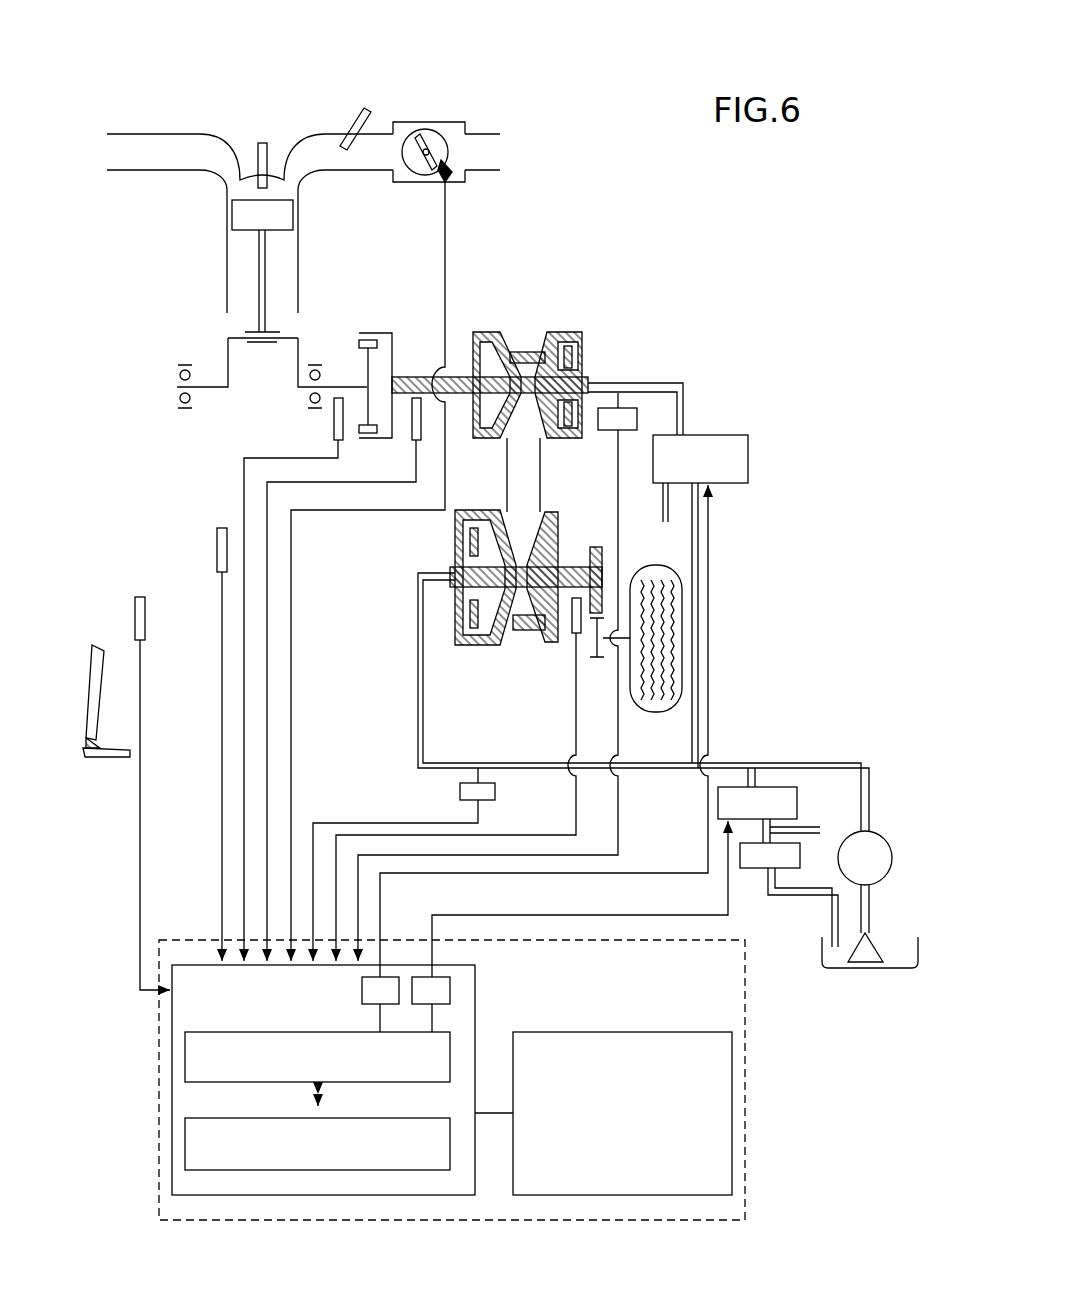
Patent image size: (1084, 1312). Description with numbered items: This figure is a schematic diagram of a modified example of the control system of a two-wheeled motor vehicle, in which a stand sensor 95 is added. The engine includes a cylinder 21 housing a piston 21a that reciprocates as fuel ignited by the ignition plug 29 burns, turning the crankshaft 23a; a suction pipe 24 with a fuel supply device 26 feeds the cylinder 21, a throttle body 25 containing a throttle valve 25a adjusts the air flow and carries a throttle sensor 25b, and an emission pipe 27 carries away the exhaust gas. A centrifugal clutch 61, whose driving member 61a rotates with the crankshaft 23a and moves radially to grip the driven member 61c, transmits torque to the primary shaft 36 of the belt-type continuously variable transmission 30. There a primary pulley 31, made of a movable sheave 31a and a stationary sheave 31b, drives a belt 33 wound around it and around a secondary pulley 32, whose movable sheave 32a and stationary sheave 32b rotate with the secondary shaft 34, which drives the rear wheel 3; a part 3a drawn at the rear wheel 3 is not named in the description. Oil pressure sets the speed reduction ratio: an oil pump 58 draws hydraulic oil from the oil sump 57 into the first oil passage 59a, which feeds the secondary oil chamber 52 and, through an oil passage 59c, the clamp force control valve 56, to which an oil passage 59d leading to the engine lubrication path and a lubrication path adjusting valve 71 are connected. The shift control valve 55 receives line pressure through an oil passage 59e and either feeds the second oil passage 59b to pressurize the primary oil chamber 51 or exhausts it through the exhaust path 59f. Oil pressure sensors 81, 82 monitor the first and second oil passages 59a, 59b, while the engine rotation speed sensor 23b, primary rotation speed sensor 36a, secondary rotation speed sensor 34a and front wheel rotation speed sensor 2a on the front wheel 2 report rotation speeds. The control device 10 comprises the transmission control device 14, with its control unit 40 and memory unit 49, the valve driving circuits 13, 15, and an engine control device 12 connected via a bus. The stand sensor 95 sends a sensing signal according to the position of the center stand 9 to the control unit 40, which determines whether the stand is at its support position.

The front wheel 2 is at (234, 70).
The emission pipe 27 is at (165, 133).
The ignition plug 29 is at (264, 141).
The fuel supply device 26 is at (346, 110).
The suction pipe 24 is at (381, 132).
The throttle body 25 is at (433, 121).
The throttle sensor 25b is at (454, 123).
The throttle valve 25a is at (454, 166).
The piston 21a is at (296, 216).
The cylinder 21 is at (300, 243).
The crankshaft 23a is at (210, 384).
The engine rotation speed sensor 23b is at (332, 420).
The clutch 61 is at (335, 267).
The driving member 61a is at (360, 338).
The driven member 61c is at (394, 346).
The primary shaft 36 is at (445, 366).
The primary rotation speed sensor 36a is at (411, 438).
The continuously variable transmission 30 is at (598, 335).
The primary pulley 31 is at (582, 251).
The stationary sheave 31b is at (490, 328).
The movable sheave 31a is at (560, 330).
The primary oil chamber 51 is at (554, 363).
The oil pressure sensor 82 is at (629, 407).
The second oil passage 59b is at (690, 411).
The shift control valve 55 is at (750, 457).
The exhaust path 59f is at (662, 498).
The oil passage 59e is at (700, 598).
The rear wheel 3 is at (684, 640).
The axle 3a is at (618, 698).
The belt 33 is at (545, 466).
The secondary shaft 34 is at (590, 560).
The secondary rotation speed sensor 34a is at (582, 640).
The secondary oil chamber 52 is at (486, 552).
The secondary pulley 32 is at (470, 716).
The movable sheave 32a is at (470, 650).
The stationary sheave 32b is at (548, 648).
The first oil passage 59a is at (416, 688).
The oil passage 59c is at (752, 770).
The clamp force control valve 56 is at (780, 787).
The oil passage 59d is at (772, 822).
The lubrication path adjusting valve 71 is at (750, 870).
The oil pump 58 is at (878, 832).
The oil sump 57 is at (868, 970).
The oil pressure sensor 81 is at (459, 792).
The front wheel rotation speed sensor 2a is at (215, 550).
The stand sensor 95 is at (135, 618).
The center stand 9 is at (95, 760).
The control device 10 is at (746, 1085).
The transmission control device 14 is at (477, 968).
The valve driving circuit 13 is at (392, 977).
The valve driving circuit 15 is at (452, 995).
The control unit 40 is at (185, 1055).
The memory unit 49 is at (185, 1143).
The engine control device 12 is at (682, 1031).